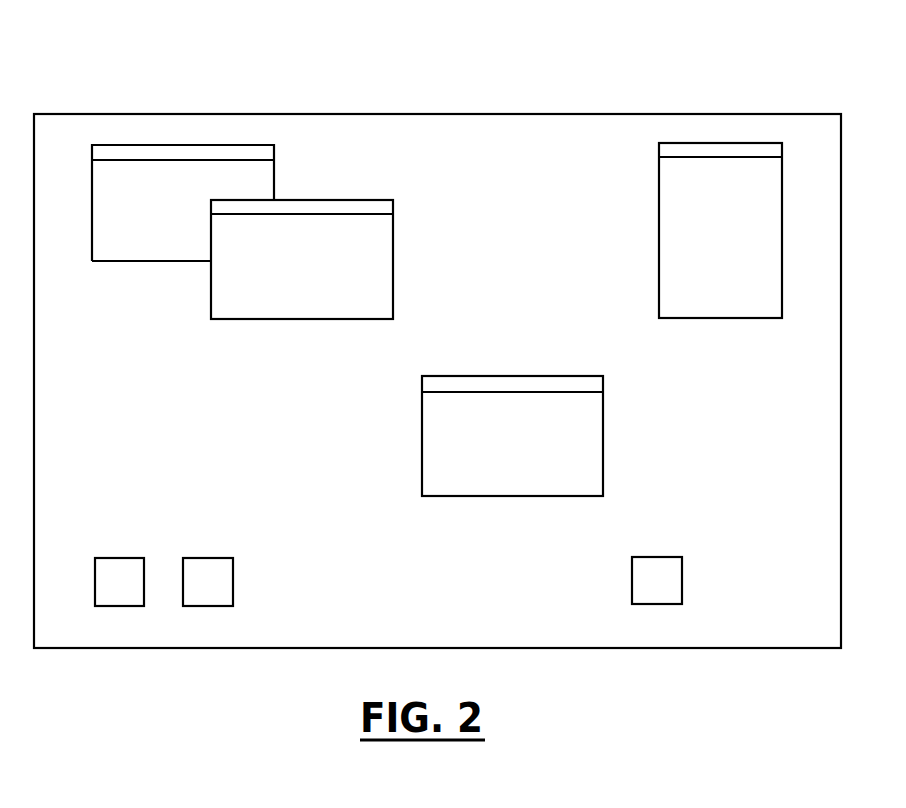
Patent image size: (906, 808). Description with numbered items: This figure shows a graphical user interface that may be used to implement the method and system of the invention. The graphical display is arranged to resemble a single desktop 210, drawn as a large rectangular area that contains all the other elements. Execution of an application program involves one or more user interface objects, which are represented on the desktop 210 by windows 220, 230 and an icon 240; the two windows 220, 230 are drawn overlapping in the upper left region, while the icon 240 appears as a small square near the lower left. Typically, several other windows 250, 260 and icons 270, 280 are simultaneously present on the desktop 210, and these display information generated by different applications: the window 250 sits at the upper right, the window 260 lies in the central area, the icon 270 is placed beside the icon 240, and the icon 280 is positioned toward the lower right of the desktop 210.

The desktop 210 is at (147, 97).
The window 220 is at (274, 166).
The window 230 is at (393, 223).
The icon 240 is at (110, 558).
The window 250 is at (659, 171).
The window 260 is at (603, 428).
The icon 270 is at (202, 558).
The icon 280 is at (662, 557).